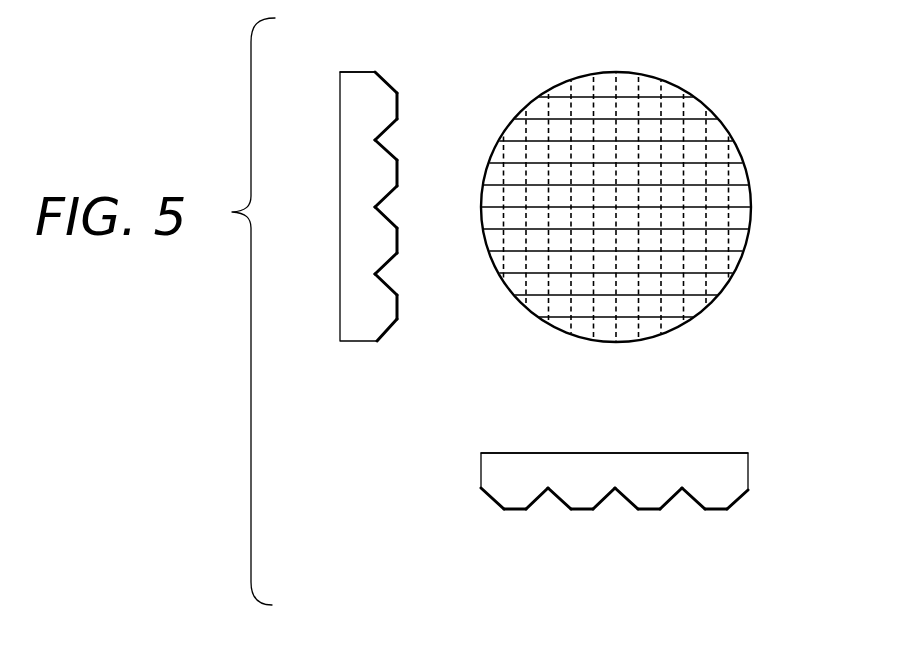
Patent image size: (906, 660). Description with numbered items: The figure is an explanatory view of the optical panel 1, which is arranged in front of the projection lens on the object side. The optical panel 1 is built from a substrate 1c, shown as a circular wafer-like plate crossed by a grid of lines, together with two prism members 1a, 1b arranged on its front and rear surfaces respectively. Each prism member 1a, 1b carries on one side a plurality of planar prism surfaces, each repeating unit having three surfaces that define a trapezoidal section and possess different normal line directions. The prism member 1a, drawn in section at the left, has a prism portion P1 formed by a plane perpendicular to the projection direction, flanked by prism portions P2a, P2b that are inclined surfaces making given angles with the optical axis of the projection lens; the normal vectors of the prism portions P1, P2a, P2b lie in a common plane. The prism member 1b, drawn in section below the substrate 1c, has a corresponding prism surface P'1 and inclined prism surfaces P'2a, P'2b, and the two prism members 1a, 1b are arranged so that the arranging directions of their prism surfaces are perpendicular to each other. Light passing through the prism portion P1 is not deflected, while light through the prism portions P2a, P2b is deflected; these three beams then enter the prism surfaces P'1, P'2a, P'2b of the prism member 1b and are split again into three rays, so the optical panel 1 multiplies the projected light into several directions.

The optical panel 1 is at (722, 103).
The prism member 1a is at (392, 73).
The prism member 1b is at (758, 494).
The substrate 1c is at (357, 72).
The prism portion P1 is at (397, 105).
The prism portion P2a is at (387, 84).
The prism portion P2b is at (386, 130).
The prism surface P'1 is at (620, 456).
The prism surface P'2a is at (586, 524).
The prism surface P'2b is at (633, 542).